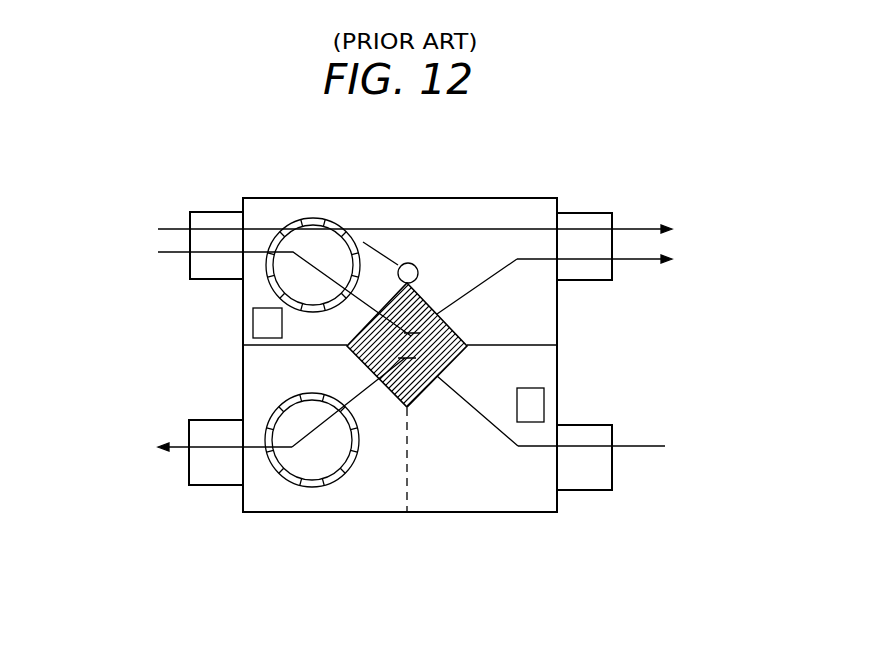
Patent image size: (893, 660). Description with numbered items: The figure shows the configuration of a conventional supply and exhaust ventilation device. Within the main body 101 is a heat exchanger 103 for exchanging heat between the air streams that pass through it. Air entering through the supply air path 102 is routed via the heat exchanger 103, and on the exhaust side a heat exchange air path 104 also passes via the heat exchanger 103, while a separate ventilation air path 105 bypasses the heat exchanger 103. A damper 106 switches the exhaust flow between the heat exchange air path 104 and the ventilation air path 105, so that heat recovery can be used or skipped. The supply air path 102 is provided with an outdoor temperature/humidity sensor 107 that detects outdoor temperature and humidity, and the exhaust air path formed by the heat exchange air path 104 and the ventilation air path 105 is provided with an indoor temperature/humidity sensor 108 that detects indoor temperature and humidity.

The main body 101 is at (262, 198).
The supply air path 102 is at (635, 447).
The heat exchanger 103 is at (357, 358).
The heat exchange air path 104 is at (630, 260).
The ventilation air path 105 is at (630, 260).
The damper 106 is at (383, 256).
The outdoor temperature/humidity sensor 107 is at (532, 407).
The indoor temperature/humidity sensor 108 is at (268, 320).